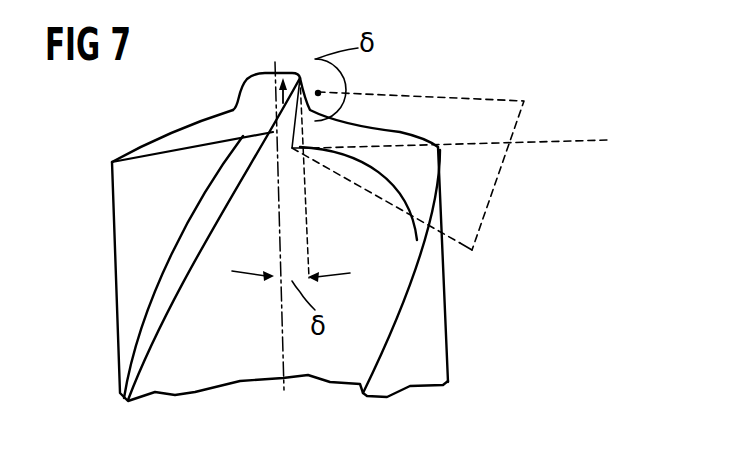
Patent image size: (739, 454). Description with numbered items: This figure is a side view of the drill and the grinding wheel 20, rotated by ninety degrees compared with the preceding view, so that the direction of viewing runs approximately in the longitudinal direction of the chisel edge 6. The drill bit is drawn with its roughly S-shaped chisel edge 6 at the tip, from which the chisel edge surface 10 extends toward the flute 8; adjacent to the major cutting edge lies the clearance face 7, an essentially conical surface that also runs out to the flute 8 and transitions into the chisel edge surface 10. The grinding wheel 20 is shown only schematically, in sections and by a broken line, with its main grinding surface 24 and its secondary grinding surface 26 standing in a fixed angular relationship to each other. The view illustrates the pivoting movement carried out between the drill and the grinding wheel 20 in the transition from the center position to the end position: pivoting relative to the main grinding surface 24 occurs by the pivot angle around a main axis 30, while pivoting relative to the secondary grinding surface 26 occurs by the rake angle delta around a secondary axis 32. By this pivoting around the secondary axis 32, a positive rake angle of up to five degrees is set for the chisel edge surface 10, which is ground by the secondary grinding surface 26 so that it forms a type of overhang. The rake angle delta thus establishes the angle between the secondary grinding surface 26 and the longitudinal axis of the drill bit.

The chisel edge 6 is at (270, 72).
The clearance face 7 is at (372, 135).
The flute 8 is at (178, 342).
The chisel edge surface 10 is at (247, 100).
The grinding wheel 20 is at (495, 204).
The main grinding surface 24 is at (458, 243).
The secondary grinding surface 26 is at (310, 110).
The main axis 30 is at (548, 140).
The secondary axis 32 is at (313, 87).